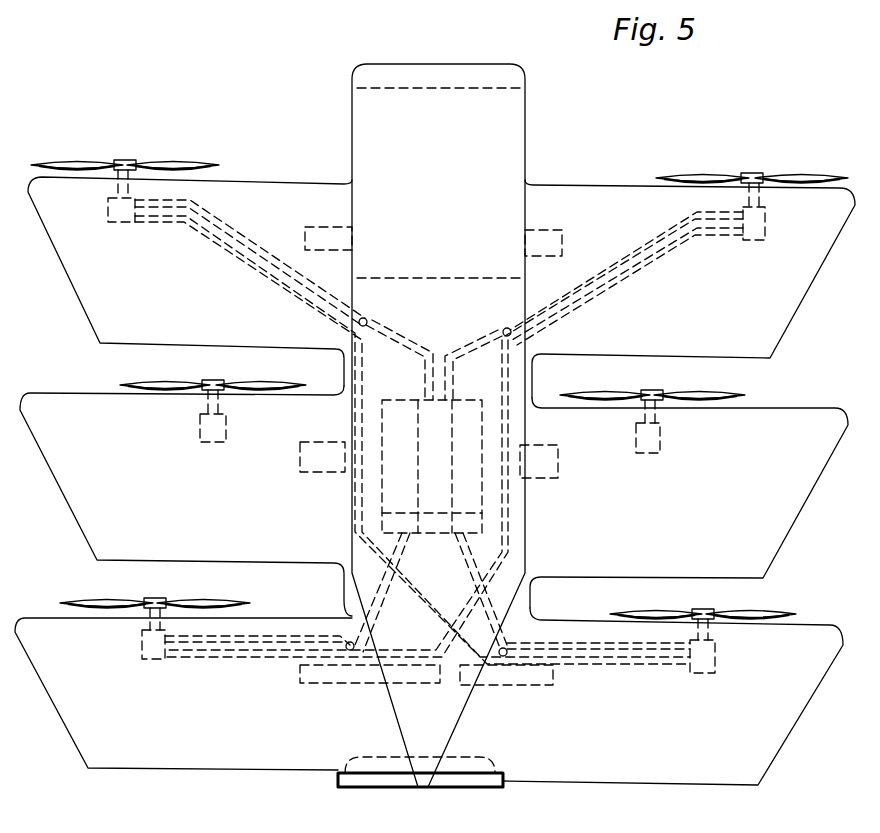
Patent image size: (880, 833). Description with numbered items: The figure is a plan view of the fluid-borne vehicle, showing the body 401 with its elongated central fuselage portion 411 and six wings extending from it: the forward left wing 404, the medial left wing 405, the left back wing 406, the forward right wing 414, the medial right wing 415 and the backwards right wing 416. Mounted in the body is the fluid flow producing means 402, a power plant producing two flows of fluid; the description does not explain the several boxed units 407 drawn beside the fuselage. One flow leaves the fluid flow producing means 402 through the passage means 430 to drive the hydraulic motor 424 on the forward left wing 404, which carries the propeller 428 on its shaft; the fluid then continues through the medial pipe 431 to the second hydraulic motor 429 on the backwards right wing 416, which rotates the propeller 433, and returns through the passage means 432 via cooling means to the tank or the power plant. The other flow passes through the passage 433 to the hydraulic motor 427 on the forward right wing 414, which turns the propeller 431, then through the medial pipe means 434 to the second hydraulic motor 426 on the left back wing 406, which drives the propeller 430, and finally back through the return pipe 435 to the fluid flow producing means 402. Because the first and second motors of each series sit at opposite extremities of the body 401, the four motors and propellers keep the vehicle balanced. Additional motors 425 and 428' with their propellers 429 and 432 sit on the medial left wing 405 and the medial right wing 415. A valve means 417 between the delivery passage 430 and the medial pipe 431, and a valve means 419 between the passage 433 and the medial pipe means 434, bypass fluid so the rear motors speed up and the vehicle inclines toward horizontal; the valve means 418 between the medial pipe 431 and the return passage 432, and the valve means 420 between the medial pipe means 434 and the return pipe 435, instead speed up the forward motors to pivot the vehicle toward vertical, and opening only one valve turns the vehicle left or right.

The body 401 is at (503, 787).
The fluid flow producing means 402 is at (400, 408).
The forward left wing 404 is at (78, 308).
The medial left wing 405 is at (78, 406).
The left back wing 406 is at (48, 614).
The control box 407 is at (326, 230).
The fuselage 411 is at (515, 126).
The forward right wing 414 is at (786, 322).
The medial right wing 415 is at (776, 540).
The backwards right wing 416 is at (778, 736).
The valve means 417 is at (367, 318).
The valve means 418 is at (506, 647).
The valve means 419 is at (505, 328).
The valve means 420 is at (347, 642).
The hydraulic motor 424 is at (108, 212).
The additional motor 425 is at (200, 438).
The second hydraulic motor 426 is at (142, 654).
The hydraulic motor 427 is at (765, 225).
The propeller 428 is at (125, 150).
The additional motor 428' is at (678, 426).
The second hydraulic motor 429 is at (264, 384).
The passage means 430 is at (218, 602).
The medial pipe 431 is at (168, 230).
The return passage means 432 is at (696, 393).
The delivery passage 433 is at (733, 612).
The medial pipe means 434 is at (668, 260).
The return pipe 435 is at (284, 634).